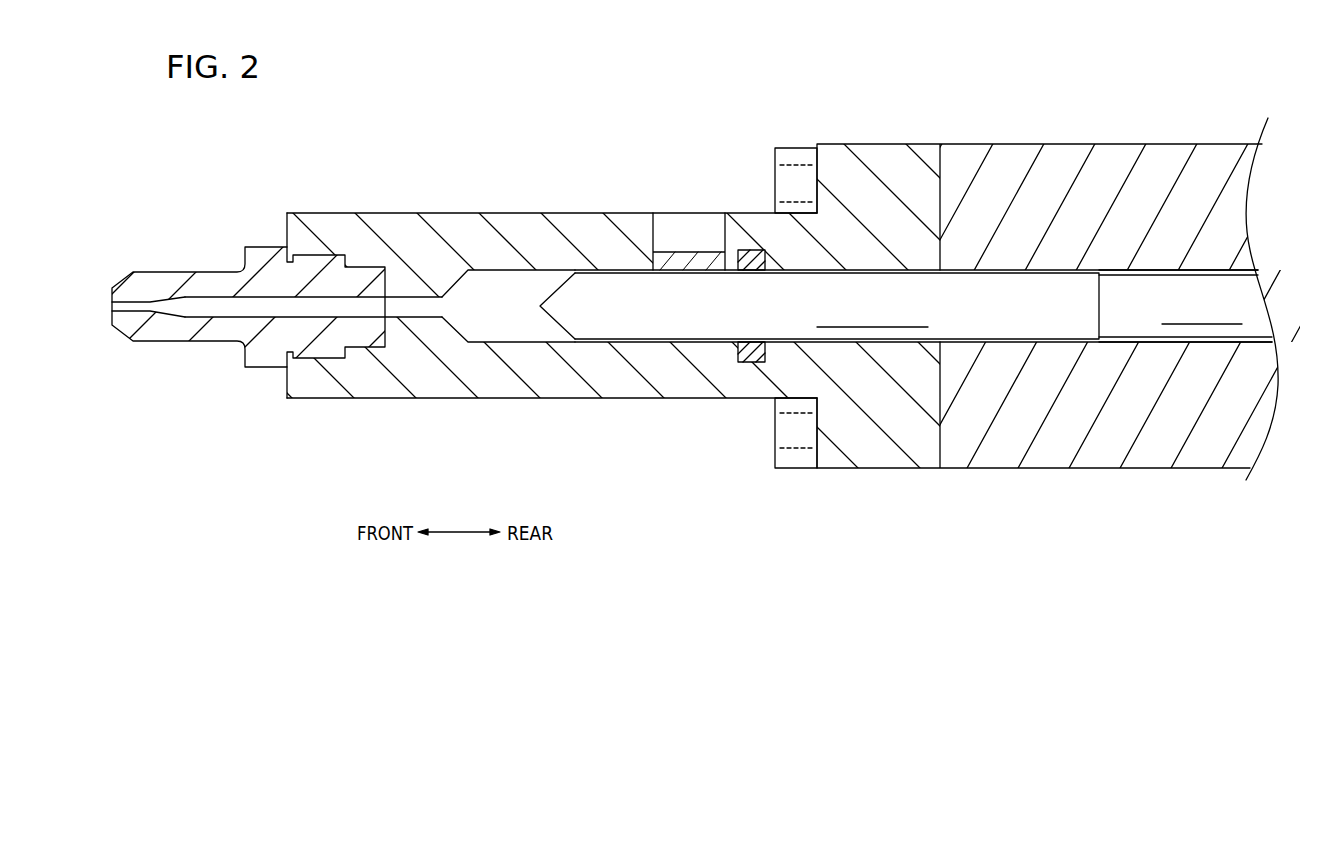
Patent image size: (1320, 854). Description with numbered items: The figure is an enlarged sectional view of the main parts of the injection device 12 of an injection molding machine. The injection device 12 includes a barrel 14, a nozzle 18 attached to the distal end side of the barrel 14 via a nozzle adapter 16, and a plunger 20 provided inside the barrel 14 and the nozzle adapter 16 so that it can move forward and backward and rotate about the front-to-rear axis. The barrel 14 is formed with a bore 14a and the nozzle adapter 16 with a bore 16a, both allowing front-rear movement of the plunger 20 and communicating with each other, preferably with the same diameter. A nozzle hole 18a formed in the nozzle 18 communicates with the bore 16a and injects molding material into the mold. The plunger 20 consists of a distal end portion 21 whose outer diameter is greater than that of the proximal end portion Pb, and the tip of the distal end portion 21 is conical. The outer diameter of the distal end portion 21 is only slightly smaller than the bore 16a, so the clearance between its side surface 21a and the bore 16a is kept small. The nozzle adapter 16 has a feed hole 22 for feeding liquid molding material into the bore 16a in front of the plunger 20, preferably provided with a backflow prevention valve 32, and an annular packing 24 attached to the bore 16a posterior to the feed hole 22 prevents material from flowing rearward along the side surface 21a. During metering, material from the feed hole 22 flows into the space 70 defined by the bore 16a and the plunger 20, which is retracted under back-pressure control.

The injection device 12 is at (712, 114).
The barrel 14 is at (1013, 163).
The bore 14a is at (1240, 280).
The nozzle adapter 16 is at (440, 230).
The bore 16a is at (496, 278).
The nozzle 18 is at (158, 283).
The nozzle hole 18a is at (143, 308).
The plunger 20 is at (1163, 93).
The distal end portion 21 is at (1040, 303).
The side surface 21a is at (611, 352).
The feed hole 22 is at (653, 228).
The packing 24 is at (745, 255).
The backflow prevention valve 32 is at (700, 262).
The space 70 is at (493, 318).
The proximal end portion Pb is at (1143, 300).